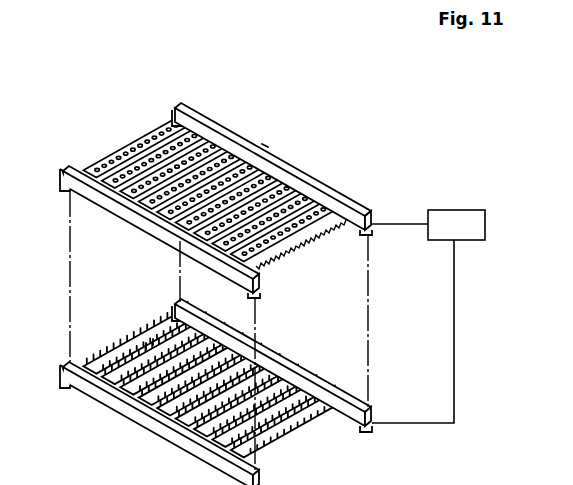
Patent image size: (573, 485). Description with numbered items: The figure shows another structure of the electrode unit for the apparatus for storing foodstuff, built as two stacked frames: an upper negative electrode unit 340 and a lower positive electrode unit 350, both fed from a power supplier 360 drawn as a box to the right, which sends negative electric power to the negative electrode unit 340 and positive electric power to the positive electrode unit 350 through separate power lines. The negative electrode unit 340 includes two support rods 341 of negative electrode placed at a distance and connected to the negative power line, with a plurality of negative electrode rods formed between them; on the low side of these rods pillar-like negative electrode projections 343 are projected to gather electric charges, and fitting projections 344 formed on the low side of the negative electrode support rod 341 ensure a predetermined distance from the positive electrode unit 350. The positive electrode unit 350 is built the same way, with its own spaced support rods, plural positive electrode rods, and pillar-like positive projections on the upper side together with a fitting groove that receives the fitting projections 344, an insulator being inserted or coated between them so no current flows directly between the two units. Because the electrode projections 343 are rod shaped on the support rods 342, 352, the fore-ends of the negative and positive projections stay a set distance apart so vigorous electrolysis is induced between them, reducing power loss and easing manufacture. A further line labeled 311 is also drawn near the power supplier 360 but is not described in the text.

The negative electrode unit 340 is at (257, 73).
The support rod of negative electrode 341 is at (220, 122).
The support rod 342 is at (197, 117).
The negative electrode projections 343 is at (247, 136).
The fitting projections 344 is at (369, 224).
The positive electrode unit 350 is at (75, 303).
The power supplier 360 is at (445, 202).
The power line 311 is at (389, 216).
The support rod 352 is at (406, 415).